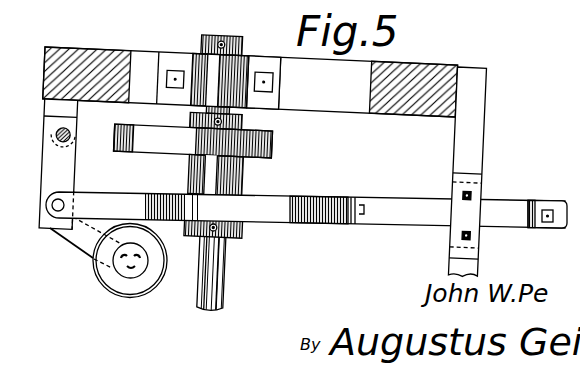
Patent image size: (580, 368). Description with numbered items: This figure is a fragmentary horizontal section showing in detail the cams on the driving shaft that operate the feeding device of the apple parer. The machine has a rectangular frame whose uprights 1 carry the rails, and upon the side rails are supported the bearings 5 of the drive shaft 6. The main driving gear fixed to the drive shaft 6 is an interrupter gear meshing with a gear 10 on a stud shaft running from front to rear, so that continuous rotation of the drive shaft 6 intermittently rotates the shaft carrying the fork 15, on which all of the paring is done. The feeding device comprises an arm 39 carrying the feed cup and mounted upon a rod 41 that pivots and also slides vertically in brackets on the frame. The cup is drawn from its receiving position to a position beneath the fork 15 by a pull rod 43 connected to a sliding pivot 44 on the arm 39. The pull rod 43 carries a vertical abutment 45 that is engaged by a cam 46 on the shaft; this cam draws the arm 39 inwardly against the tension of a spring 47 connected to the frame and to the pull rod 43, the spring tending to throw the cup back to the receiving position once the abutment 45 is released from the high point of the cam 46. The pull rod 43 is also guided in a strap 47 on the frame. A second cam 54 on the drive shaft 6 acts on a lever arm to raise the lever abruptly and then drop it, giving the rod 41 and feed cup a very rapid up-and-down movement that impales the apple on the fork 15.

The uprights 1 is at (98, 50).
The bearings 5 is at (263, 64).
The drive shaft 6 is at (223, 285).
The gear 10 is at (100, 277).
The fork 15 is at (133, 268).
The arm 39 is at (52, 162).
The rod 41 is at (53, 135).
The pull rod 43 is at (120, 184).
The sliding pivot 44 is at (55, 207).
The vertical abutment 45 is at (353, 196).
The cam 46 is at (288, 196).
The spring 47 is at (468, 210).
The cam 54 is at (185, 132).